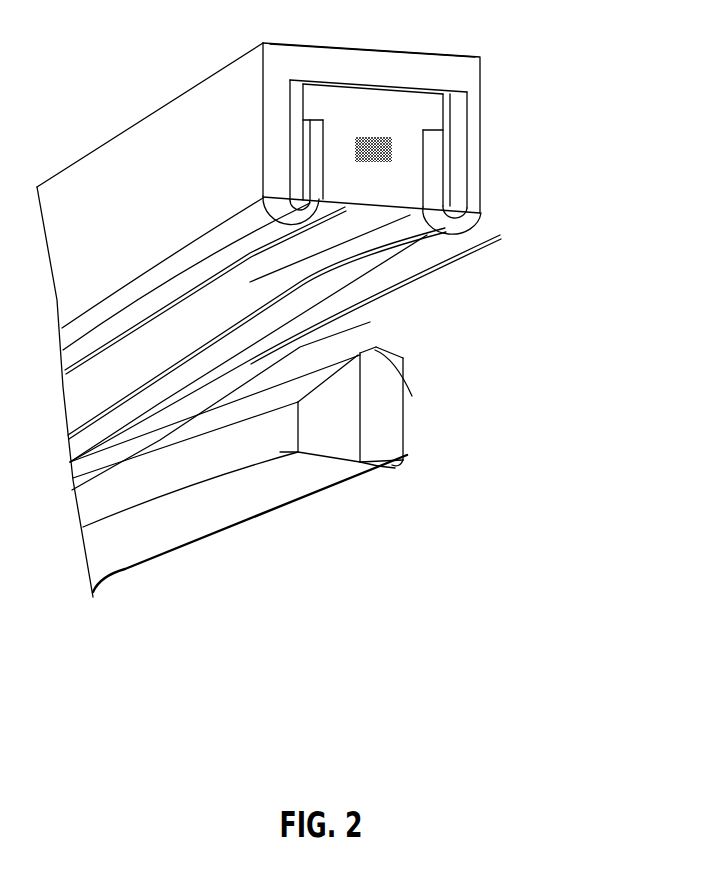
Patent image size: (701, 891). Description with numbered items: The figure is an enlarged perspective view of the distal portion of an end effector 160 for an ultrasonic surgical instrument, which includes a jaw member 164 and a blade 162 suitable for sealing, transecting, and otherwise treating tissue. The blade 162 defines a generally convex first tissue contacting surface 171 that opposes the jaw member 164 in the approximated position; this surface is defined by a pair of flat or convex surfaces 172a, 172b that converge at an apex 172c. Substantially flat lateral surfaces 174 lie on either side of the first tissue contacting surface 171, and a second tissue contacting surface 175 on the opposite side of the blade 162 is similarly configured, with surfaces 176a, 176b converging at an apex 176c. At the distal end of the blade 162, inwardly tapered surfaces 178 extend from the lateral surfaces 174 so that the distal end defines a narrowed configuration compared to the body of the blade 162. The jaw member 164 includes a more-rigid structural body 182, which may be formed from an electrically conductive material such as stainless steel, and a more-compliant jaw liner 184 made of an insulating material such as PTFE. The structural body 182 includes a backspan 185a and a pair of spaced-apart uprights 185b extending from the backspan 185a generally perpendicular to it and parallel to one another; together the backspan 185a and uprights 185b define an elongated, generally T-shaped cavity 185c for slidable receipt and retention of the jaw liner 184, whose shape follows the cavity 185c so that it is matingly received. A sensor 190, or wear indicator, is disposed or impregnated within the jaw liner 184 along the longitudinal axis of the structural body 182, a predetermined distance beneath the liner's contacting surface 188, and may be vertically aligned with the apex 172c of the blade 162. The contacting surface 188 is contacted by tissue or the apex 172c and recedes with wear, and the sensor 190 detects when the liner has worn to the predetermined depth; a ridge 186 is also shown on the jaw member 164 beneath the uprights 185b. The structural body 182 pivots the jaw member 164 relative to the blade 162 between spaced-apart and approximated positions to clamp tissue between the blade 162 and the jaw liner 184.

The end effector 160 is at (512, 301).
The blade 162 is at (440, 524).
The jaw member 164 is at (371, 118).
The first tissue contacting surface 171 is at (386, 335).
The surface 172a is at (413, 396).
The surface 172b is at (400, 350).
The apex 172c is at (387, 348).
The lateral surfaces 174 is at (197, 473).
The second tissue contacting surface 175 is at (397, 474).
The surface 176a is at (377, 470).
The surface 176b is at (405, 450).
The apex 176c is at (380, 475).
The inwardly tapered surfaces 178 is at (323, 438).
The structural body 182 is at (177, 120).
The jaw liner 184 is at (382, 112).
The backspan 185a is at (327, 58).
The uprights 185b is at (278, 108).
The cavity 185c is at (412, 88).
The ridge 186 is at (343, 202).
The contacting surface 188 is at (243, 291).
The sensor 190 is at (350, 153).